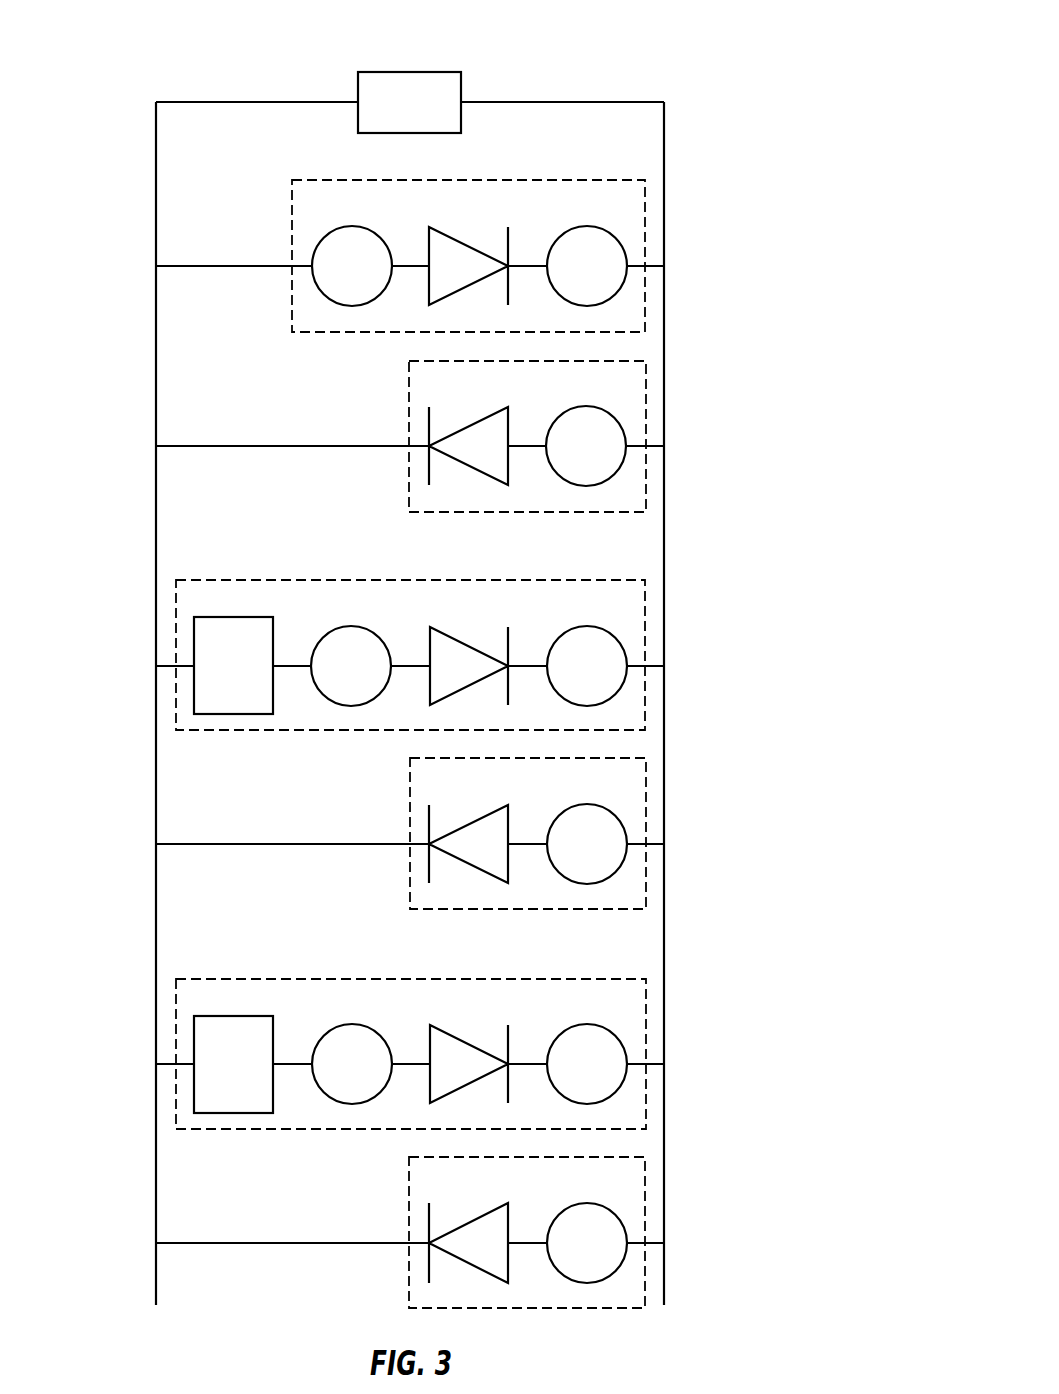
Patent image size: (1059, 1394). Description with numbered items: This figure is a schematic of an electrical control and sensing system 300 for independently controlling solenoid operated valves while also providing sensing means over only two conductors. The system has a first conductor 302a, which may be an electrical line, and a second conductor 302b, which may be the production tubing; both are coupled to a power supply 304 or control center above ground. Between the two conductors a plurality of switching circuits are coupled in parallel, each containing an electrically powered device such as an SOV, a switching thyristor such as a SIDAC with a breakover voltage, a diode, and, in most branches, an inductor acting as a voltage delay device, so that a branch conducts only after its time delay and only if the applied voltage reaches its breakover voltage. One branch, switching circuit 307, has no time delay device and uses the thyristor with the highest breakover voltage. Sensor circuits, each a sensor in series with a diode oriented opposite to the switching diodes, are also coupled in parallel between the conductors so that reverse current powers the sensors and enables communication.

The electrical control and sensing system 300 is at (412, 654).
The first conductor 302a is at (156, 160).
The second conductor 302b is at (664, 160).
The power supply 304 is at (407, 72).
The switching circuit 307 is at (446, 256).